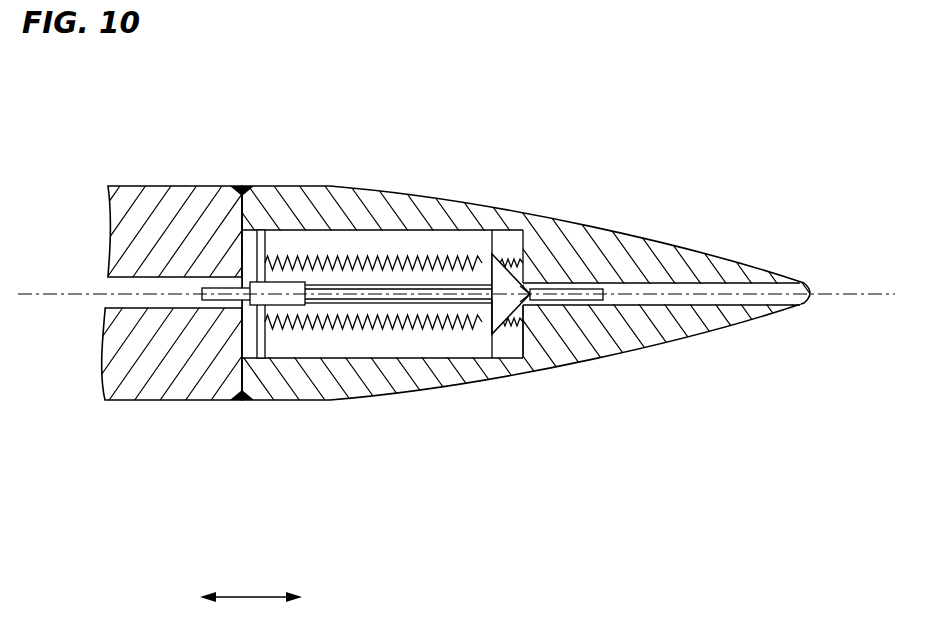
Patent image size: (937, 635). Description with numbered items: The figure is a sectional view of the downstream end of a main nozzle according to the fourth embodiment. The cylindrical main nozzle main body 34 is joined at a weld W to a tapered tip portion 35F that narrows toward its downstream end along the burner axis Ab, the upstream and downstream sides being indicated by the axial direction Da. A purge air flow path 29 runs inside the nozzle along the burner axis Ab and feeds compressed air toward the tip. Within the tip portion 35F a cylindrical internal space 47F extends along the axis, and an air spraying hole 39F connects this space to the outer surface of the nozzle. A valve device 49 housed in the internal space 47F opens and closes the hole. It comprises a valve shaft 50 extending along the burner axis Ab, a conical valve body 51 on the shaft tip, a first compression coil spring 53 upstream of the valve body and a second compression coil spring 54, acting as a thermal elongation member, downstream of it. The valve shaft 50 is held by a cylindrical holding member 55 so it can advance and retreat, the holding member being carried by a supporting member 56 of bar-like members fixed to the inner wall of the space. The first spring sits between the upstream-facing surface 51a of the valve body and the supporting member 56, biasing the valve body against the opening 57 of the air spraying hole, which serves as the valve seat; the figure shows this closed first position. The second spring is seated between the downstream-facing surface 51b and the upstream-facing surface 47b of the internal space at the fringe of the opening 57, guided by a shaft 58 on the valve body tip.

The purge air flow path 29 is at (153, 300).
The main nozzle main body 34 is at (148, 200).
The tip portion 35F is at (517, 237).
The air spraying hole 39F is at (717, 284).
The internal space 47F is at (375, 244).
The surface of the internal space 47b is at (521, 333).
The valve device 49 is at (414, 222).
The valve shaft 50 is at (363, 300).
The valve body 51 is at (494, 254).
The surface of the valve body facing the upstream side 51a is at (487, 312).
The surface of the valve body facing the downstream side 51b is at (532, 291).
The first compression coil spring 53 is at (326, 258).
The second compression coil spring 54 is at (512, 262).
The holding member 55 is at (293, 303).
The supporting member 56 is at (262, 250).
The opening 57 is at (527, 297).
The shaft 58 is at (593, 300).
The weld W is at (242, 186).
The burner axis Ab is at (851, 293).
The axial direction Da is at (263, 588).